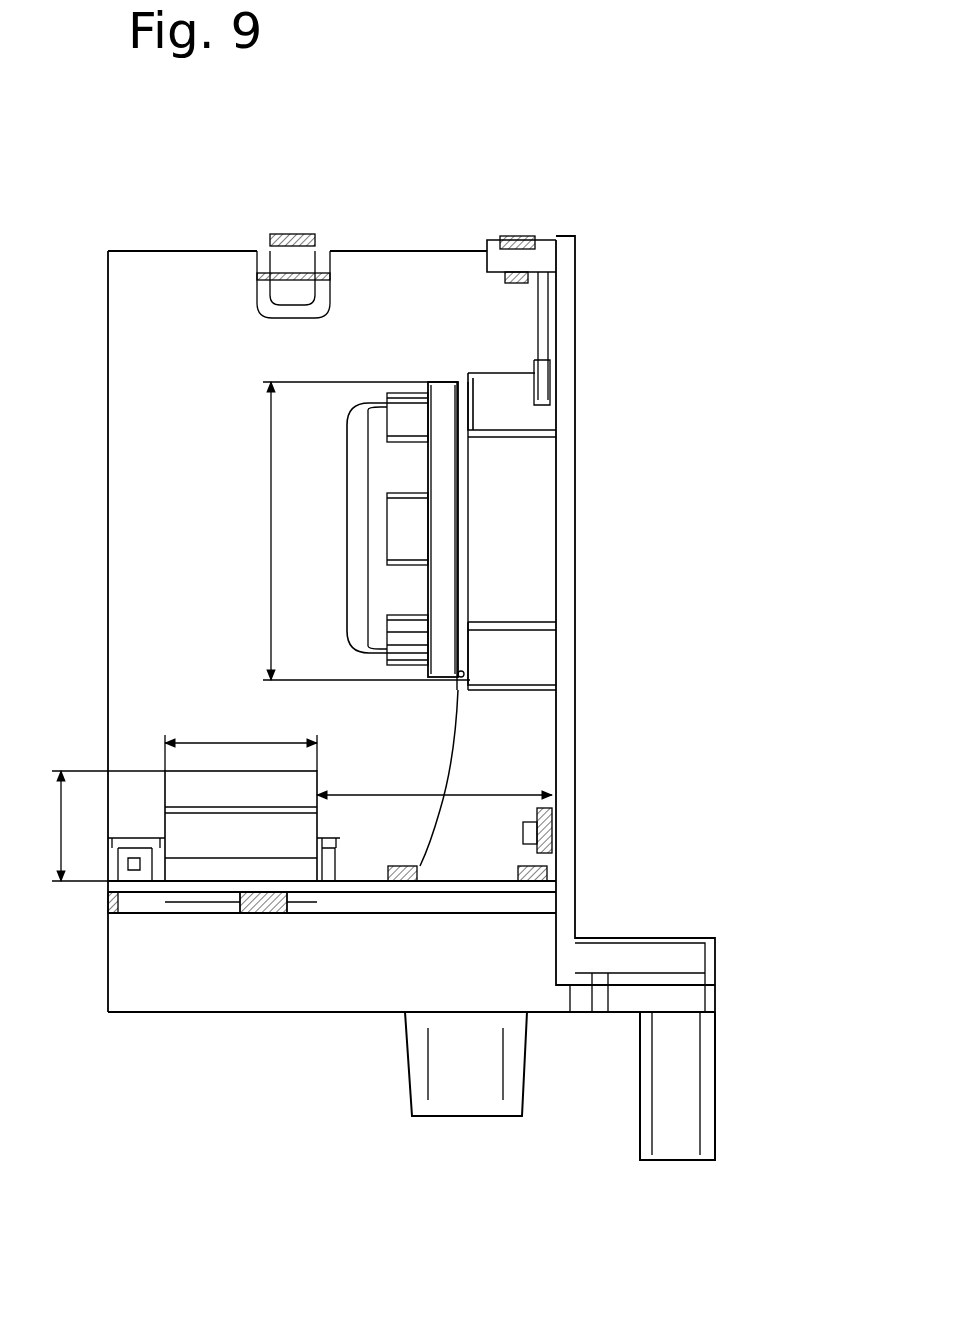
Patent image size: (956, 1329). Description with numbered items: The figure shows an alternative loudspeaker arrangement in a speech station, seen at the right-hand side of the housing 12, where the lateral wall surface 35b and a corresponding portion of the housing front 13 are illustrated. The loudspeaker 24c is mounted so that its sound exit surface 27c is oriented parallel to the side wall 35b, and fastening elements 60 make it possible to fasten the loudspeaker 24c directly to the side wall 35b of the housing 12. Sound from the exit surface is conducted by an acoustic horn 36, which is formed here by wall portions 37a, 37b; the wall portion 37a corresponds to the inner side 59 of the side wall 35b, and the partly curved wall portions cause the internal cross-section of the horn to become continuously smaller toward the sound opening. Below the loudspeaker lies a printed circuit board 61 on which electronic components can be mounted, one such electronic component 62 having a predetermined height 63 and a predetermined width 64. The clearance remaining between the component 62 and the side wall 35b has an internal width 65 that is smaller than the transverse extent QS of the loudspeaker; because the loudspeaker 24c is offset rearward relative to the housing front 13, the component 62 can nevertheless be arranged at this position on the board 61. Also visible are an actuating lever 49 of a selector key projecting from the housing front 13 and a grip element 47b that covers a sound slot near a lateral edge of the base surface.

The housing 12 is at (193, 225).
The housing front 13 is at (205, 1012).
The loudspeaker 24c is at (380, 455).
The sound exit surface 27c is at (462, 548).
The side wall 35b is at (568, 455).
The acoustic horn 36 is at (510, 766).
The wall portion 37a is at (530, 600).
The wall portion 37b is at (462, 718).
The grip element 47b is at (680, 1093).
The actuating lever 49 is at (470, 1078).
The inner side 59 is at (528, 517).
The fastening elements 60 is at (500, 400).
The printed circuit board 61 is at (500, 883).
The electronic component 62 is at (192, 798).
The height 63 is at (61, 825).
The width 64 is at (228, 743).
The internal width 65 is at (382, 797).
The transverse extent QS is at (268, 528).